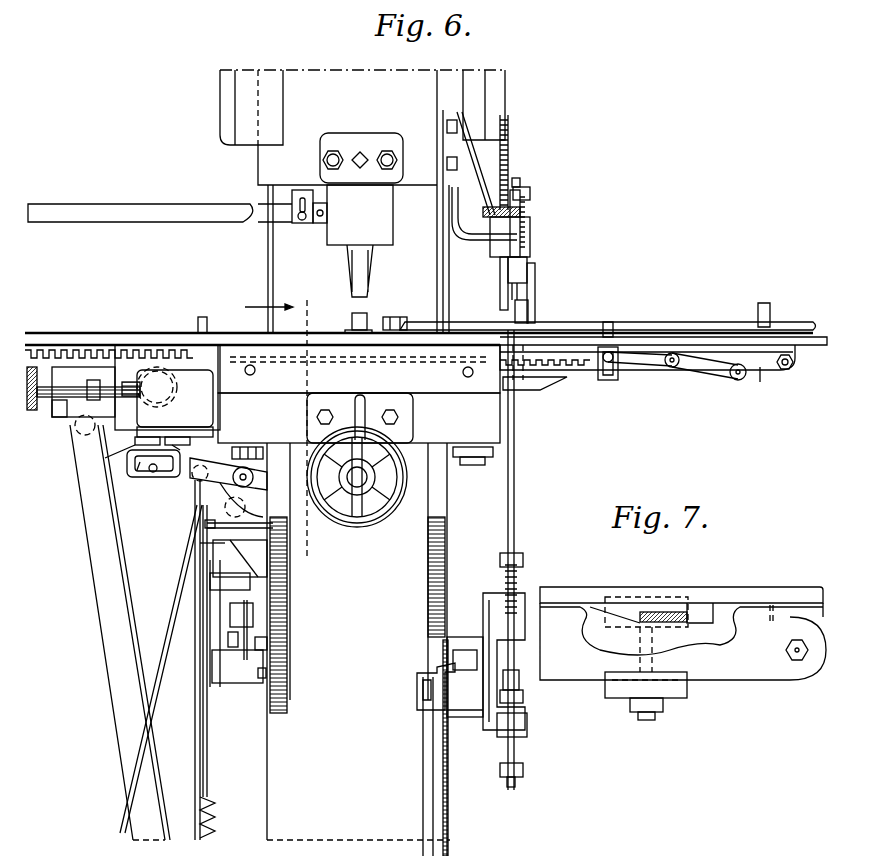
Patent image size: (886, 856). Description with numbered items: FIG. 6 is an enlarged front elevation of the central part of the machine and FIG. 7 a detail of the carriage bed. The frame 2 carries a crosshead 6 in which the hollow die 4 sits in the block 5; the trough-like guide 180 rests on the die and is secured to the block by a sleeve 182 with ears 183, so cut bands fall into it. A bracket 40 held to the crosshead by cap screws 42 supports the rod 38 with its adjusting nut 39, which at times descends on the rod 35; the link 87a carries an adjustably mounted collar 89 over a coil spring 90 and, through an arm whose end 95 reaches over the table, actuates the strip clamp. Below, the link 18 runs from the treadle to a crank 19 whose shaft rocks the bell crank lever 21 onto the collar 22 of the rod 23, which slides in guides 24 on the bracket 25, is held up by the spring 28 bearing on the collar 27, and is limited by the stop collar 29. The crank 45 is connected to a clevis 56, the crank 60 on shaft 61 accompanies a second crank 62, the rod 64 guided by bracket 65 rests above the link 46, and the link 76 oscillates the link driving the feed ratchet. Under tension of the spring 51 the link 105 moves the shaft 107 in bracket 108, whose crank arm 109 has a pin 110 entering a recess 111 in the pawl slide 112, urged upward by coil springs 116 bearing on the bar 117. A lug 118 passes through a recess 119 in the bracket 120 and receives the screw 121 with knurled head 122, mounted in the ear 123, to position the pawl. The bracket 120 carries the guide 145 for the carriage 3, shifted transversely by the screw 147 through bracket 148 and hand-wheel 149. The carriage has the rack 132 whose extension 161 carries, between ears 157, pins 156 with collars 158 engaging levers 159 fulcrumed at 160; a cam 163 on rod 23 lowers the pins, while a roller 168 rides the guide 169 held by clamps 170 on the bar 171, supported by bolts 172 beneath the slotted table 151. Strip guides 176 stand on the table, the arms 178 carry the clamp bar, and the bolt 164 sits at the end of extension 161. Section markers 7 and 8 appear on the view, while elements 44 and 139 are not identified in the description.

In FIG. 6, the frame 2 is at (447, 805).
In FIG. 6, the carriage 3 is at (768, 370).
In FIG. 6, the die 4 is at (370, 270).
In FIG. 6, the block 5 is at (388, 208).
In FIG. 6, the crosshead 6 is at (297, 152).
In FIG. 6, the section plane 7 is at (520, 112).
In FIG. 6, the section plane 8 is at (277, 429).
In FIG. 6, the link 18 is at (428, 752).
In FIG. 6, the crank 19 is at (432, 668).
In FIG. 6, the bell crank lever 21 is at (525, 620).
In FIG. 6, the collar 22 is at (523, 696).
In FIG. 6, the rod 23 is at (514, 510).
In FIG. 6, the guides 24 is at (527, 732).
In FIG. 6, the bracket 25 is at (470, 720).
In FIG. 6, the adjustably mounted collar 27 is at (523, 557).
In FIG. 6, the coil spring 28 is at (518, 578).
In FIG. 6, the stop collar 29 is at (523, 768).
In FIG. 6, the rod 35 is at (508, 548).
In FIG. 6, the rod 38 is at (500, 299).
In FIG. 6, the adjusting nut 39 is at (522, 212).
In FIG. 6, the bracket 40 is at (484, 241).
In FIG. 6, the cap screws 42 is at (447, 162).
In FIG. 6, the plate 44 is at (226, 678).
In FIG. 6, the crank 45 is at (245, 683).
In FIG. 6, the link 46 is at (210, 616).
In FIG. 6, the spring 51 is at (220, 808).
In FIG. 6, the clevis 56 is at (242, 605).
In FIG. 6, the crank 60 is at (246, 527).
In FIG. 6, the shaft 61 is at (228, 474).
In FIG. 6, the second crank 62 is at (207, 321).
In FIG. 6, the rod 64 is at (205, 523).
In FIG. 6, the bracket 65 is at (200, 542).
In FIG. 6, the link 76 is at (104, 636).
In FIG. 6, the link 87a is at (520, 182).
In FIG. 6, the adjustably mounted collar 89 is at (530, 193).
In FIG. 6, the coil spring 90 is at (526, 236).
In FIG. 6, the end 95 is at (530, 310).
In FIG. 6, the link 105 is at (160, 655).
In FIG. 6, the shaft 107 is at (245, 467).
In FIG. 6, the bracket 108 is at (290, 518).
In FIG. 6, the crank arm 109 is at (178, 477).
In FIG. 6, the crank pin 110 is at (153, 472).
In FIG. 6, the recess 111 is at (142, 472).
In FIG. 6, the slide 112 is at (175, 420).
In FIG. 6, the coil springs 116 is at (172, 440).
In FIG. 6, the bar 117 is at (145, 456).
In FIG. 6, the lug 118 is at (122, 395).
In FIG. 6, the recess 119 is at (150, 382).
In FIG. 6, the bracket 120 is at (435, 424).
In FIG. 6, the screw 121 is at (95, 377).
In FIG. 6, the knurled head 122 is at (32, 410).
In FIG. 6, the ear 123 is at (60, 417).
In FIG. 6, the rack bar 132 is at (580, 365).
In FIG. 6, the bar 139 is at (195, 556).
In FIG. 6, the guide 145 is at (419, 363).
In FIG. 6, the screw 147 is at (357, 480).
In FIG. 6, the bracket 148 is at (350, 408).
In FIG. 6, the hand-wheel 149 is at (380, 505).
In FIG. 6, the table 151 is at (700, 330).
In FIG. 7, the table 151 is at (737, 592).
In FIG. 6, the pins 156 is at (610, 322).
In FIG. 6, the ears 157 is at (606, 382).
In FIG. 6, the collars 158 is at (603, 356).
In FIG. 6, the lever 159 is at (655, 367).
In FIG. 6, the fulcrum 160 is at (676, 368).
In FIG. 6, the extension 161 is at (758, 385).
In FIG. 6, the cam 163 is at (550, 392).
In FIG. 6, the bolt 164 is at (794, 364).
In FIG. 6, the roller 168 is at (740, 380).
In FIG. 7, the guide 169 is at (608, 618).
In FIG. 7, the clamps 170 is at (672, 700).
In FIG. 7, the bar 171 is at (740, 683).
In FIG. 7, the bolts 172 is at (796, 665).
In FIG. 6, the strip guides 176 is at (397, 310).
In FIG. 6, the arms 178 is at (764, 295).
In FIG. 6, the guide 180 is at (157, 212).
In FIG. 6, the sleeve 182 is at (302, 223).
In FIG. 6, the ears 183 is at (322, 223).